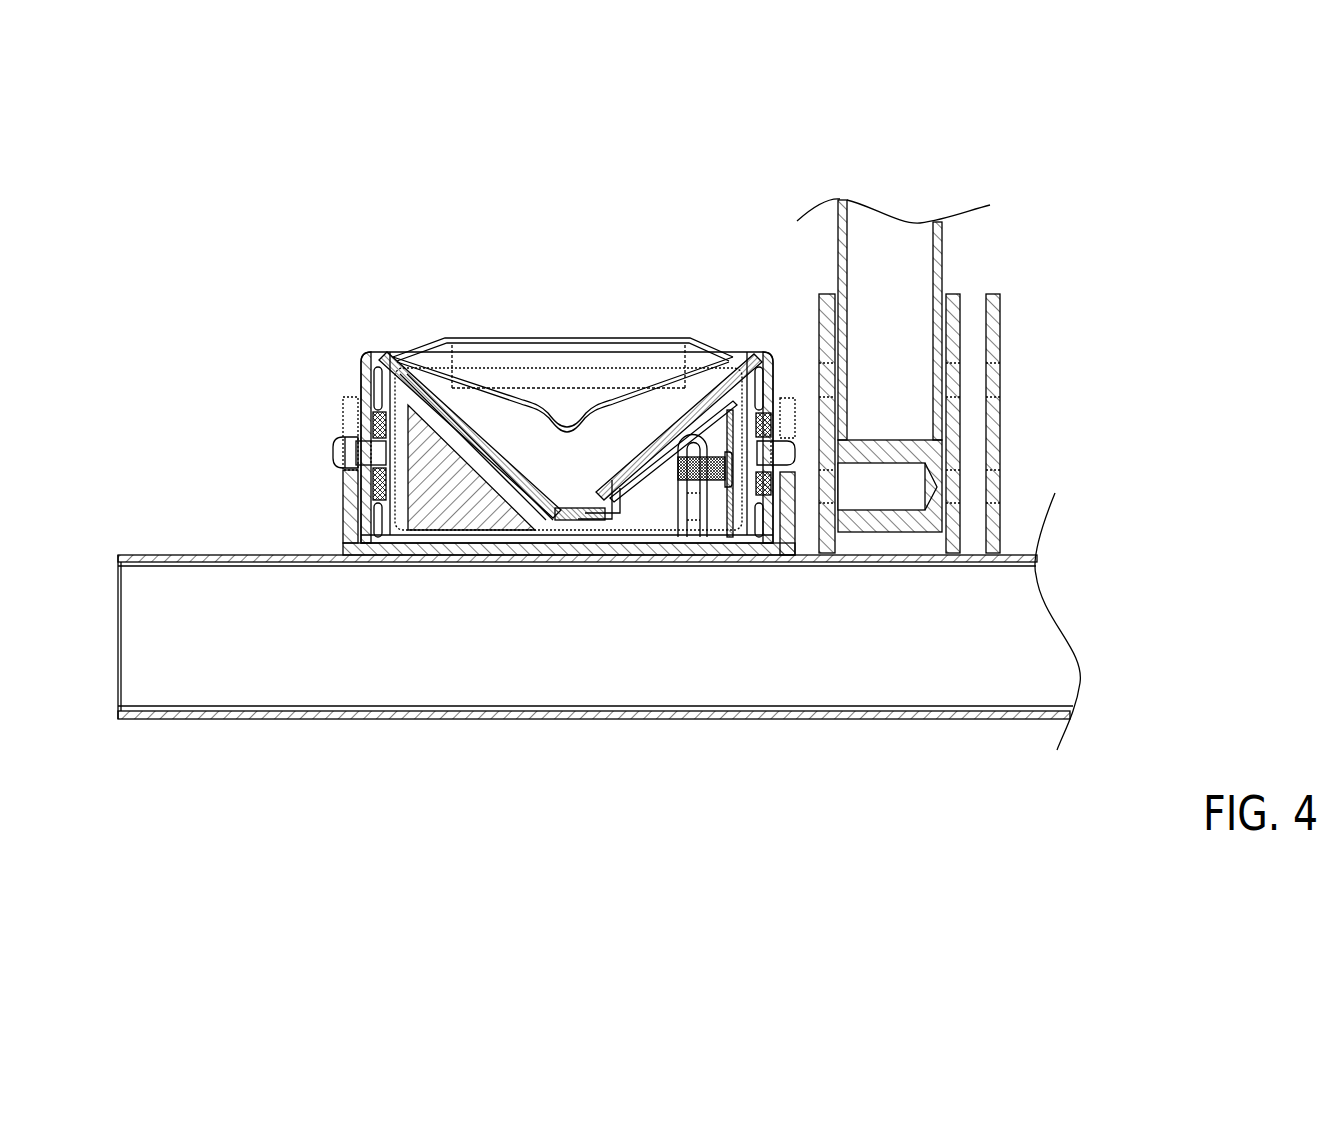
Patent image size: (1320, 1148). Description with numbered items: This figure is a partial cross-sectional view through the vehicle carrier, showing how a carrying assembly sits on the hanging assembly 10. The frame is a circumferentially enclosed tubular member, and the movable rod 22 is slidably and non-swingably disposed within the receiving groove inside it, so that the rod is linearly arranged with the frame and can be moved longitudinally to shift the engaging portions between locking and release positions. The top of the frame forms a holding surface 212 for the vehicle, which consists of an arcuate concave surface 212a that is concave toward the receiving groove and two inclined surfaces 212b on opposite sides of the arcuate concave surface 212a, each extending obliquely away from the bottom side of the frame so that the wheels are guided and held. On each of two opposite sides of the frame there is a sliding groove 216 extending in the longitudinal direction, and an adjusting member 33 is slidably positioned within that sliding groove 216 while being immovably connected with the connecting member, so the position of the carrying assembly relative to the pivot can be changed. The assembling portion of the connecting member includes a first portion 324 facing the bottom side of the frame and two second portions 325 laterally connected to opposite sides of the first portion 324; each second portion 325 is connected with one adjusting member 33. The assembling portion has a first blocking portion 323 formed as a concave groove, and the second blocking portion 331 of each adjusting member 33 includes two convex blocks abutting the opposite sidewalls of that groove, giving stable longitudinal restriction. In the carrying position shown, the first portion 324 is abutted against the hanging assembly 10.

The hanging assembly 10 is at (140, 593).
The holding surface 212 is at (647, 190).
The arcuate concave surface 212a is at (570, 505).
The inclined surface 212b is at (685, 405).
The sliding groove 216 is at (362, 400).
The movable rod 22 is at (640, 462).
The first blocking portion 323 is at (370, 422).
The adjusting member 33 is at (352, 405).
The second blocking portion 331 is at (348, 452).
The first portion 324 is at (478, 548).
The second portion 325 is at (352, 520).